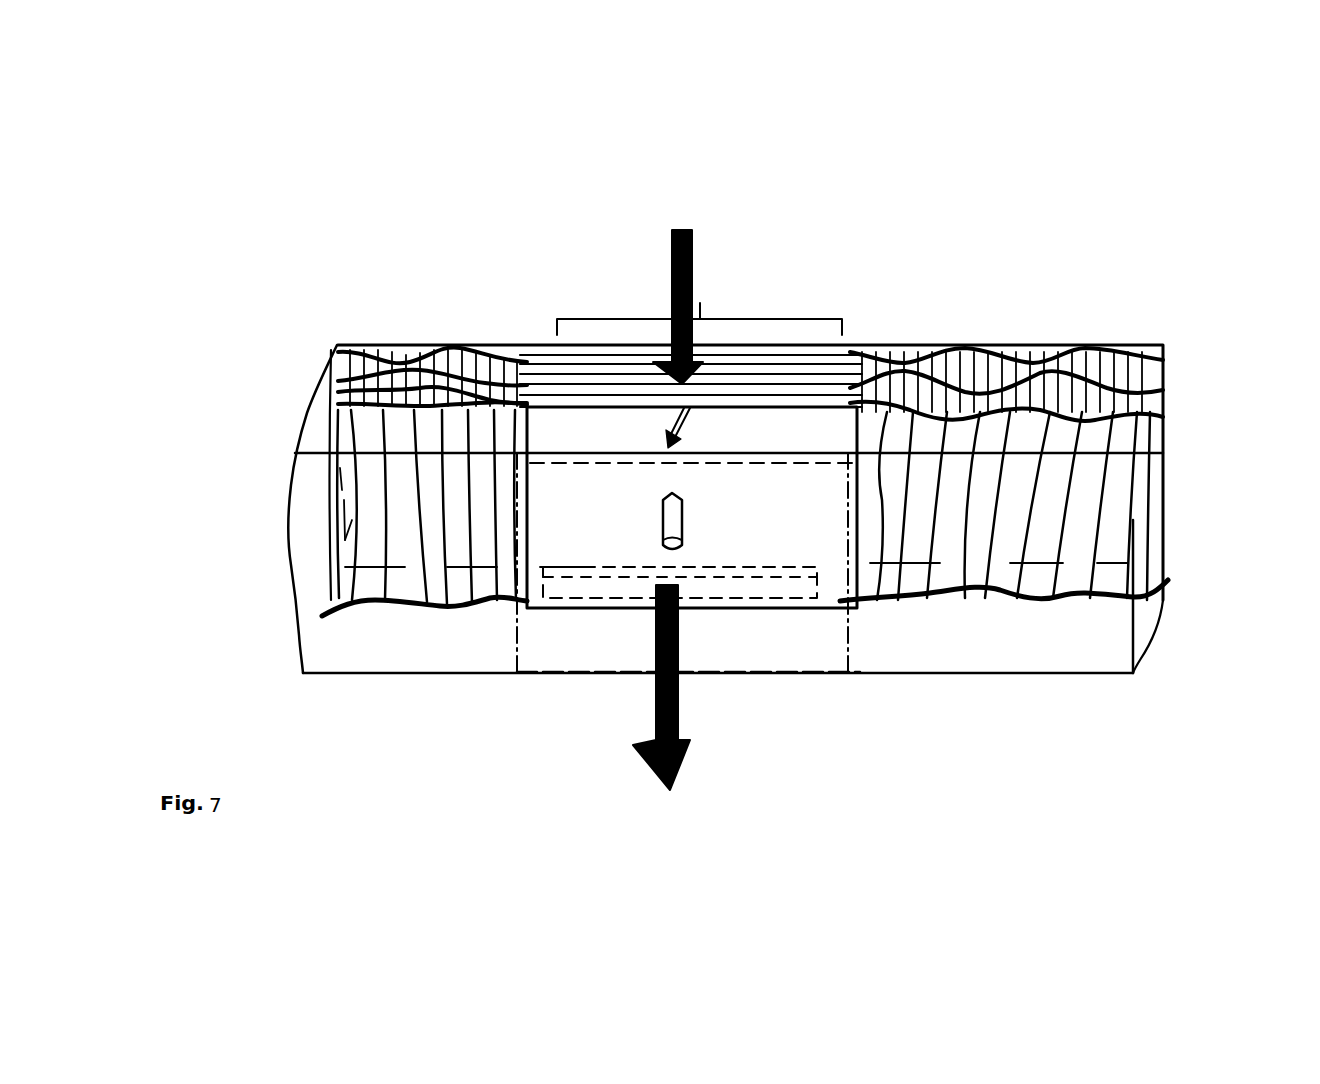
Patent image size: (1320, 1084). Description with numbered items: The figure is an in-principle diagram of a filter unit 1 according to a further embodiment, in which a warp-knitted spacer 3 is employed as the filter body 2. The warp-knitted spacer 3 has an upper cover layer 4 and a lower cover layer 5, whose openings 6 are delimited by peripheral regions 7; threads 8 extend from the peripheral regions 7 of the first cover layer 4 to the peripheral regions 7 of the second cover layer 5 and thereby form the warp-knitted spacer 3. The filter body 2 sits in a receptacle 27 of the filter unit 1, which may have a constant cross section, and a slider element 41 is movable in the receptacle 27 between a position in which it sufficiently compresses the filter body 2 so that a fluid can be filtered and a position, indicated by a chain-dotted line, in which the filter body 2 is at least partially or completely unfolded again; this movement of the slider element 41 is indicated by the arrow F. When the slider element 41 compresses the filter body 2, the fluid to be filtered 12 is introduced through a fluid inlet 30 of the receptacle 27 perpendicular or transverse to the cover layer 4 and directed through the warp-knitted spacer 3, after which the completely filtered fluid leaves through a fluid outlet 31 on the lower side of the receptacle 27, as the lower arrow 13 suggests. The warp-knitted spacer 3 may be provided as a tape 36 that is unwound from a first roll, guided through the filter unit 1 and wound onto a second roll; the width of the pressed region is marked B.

The filter unit 1 is at (397, 338).
The filter body 2 is at (322, 545).
The warp-knitted spacer 3 is at (367, 495).
The upper cover layer 4 is at (323, 381).
The lower cover layer 5 is at (320, 613).
The openings 6 is at (973, 362).
The peripheral regions 7 is at (428, 368).
The threads 8 is at (390, 478).
The fluid to be filtered 12 is at (690, 281).
The pulling direction arrow 13 is at (668, 722).
The receptacle 27 is at (588, 335).
The fluid inlet 30 is at (763, 353).
The fluid outlet 31 is at (760, 598).
The tape 36 is at (1093, 495).
The slider element 41 is at (577, 432).
The width B is at (701, 298).
The arrow F is at (697, 433).